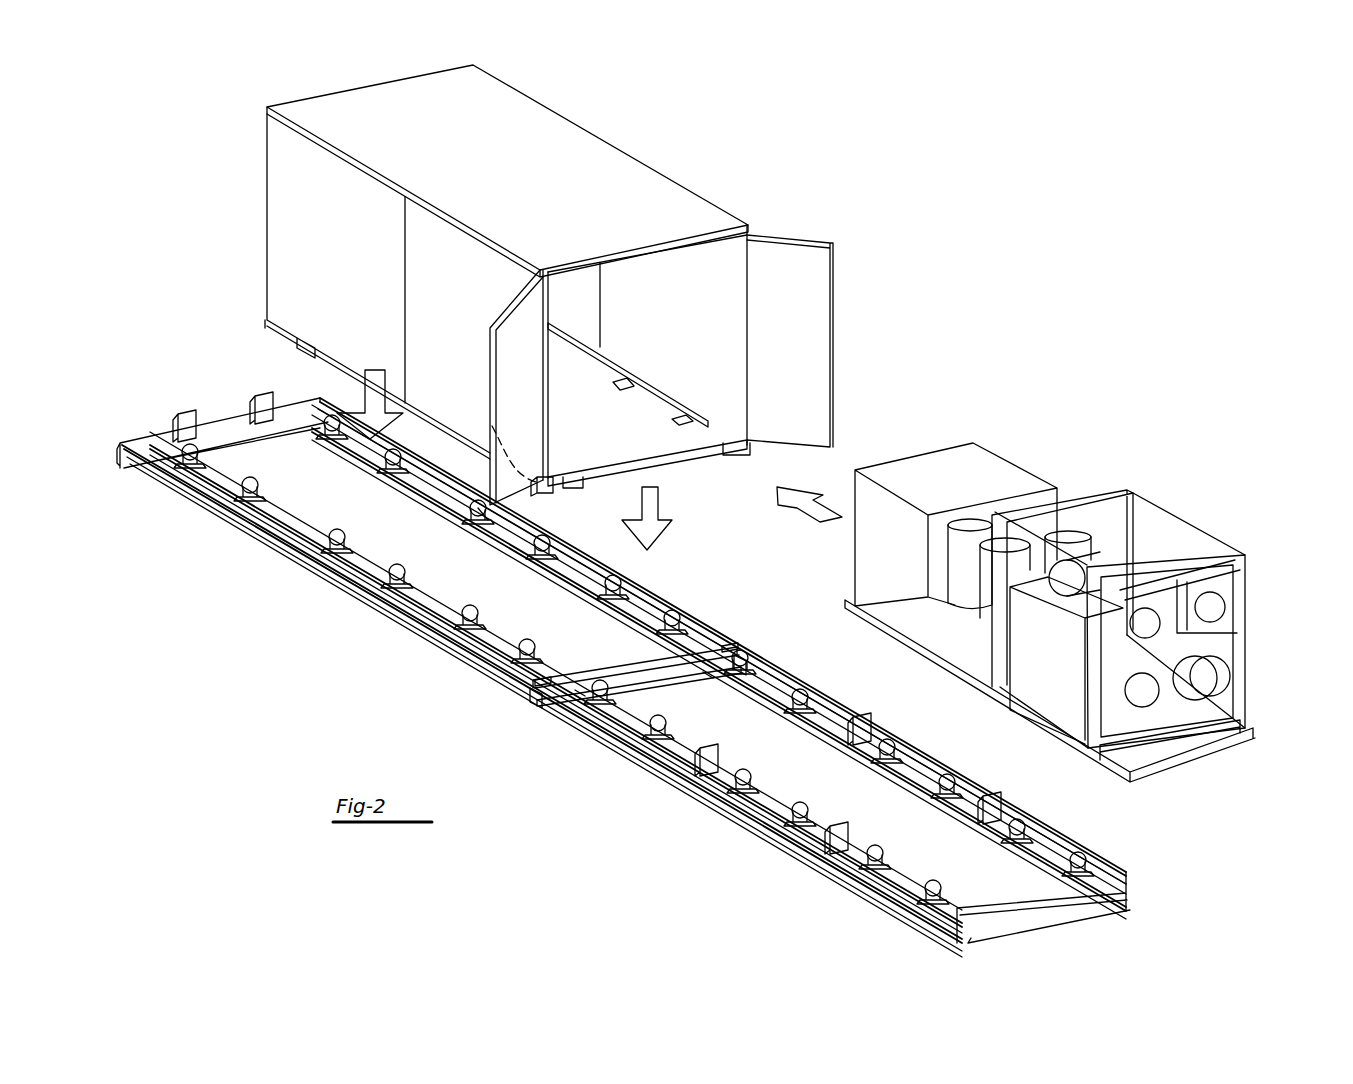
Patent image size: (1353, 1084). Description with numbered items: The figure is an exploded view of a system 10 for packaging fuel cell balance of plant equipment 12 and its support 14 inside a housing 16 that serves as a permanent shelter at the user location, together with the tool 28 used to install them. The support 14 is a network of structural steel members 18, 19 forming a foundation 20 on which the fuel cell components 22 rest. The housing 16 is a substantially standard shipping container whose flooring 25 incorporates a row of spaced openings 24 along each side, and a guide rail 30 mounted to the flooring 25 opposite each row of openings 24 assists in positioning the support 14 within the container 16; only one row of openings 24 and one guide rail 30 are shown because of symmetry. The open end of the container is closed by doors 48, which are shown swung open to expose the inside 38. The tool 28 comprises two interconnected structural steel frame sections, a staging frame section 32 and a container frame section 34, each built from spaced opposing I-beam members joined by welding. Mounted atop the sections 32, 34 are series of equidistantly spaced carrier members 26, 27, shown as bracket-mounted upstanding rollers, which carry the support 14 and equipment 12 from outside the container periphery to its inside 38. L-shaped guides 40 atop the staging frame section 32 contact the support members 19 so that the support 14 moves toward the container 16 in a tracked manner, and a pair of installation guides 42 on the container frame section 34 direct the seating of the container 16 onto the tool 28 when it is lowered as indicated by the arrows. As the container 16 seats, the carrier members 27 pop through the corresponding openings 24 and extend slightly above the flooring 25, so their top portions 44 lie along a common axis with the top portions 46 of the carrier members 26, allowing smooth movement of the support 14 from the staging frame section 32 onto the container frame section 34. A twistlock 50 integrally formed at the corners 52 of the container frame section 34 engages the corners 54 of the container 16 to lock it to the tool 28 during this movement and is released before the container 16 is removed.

The system 10 is at (896, 352).
The fuel cell balance of plant equipment 12 is at (1090, 429).
The support 14 is at (1225, 807).
The housing 16 is at (731, 164).
The structural steel member 18 is at (1222, 620).
The structural steel member 19 is at (1240, 745).
The foundation 20 is at (1172, 730).
The fuel cell components 22 is at (1140, 525).
The openings 24 is at (700, 427).
The flooring 25 is at (630, 430).
The carrier members 26 is at (900, 862).
The carrier members 27 is at (537, 480).
The tool 28 is at (266, 592).
The guide rail 30 is at (655, 383).
The staging frame section 32 is at (750, 817).
The container frame section 34 is at (253, 517).
The inside 38 is at (592, 375).
The guides 40 is at (690, 765).
The installation guides 42 is at (262, 398).
The top portions 44 is at (669, 617).
The top portions 46 is at (797, 693).
The door 48 is at (534, 403).
The twistlock 50 is at (490, 424).
The corners 52 is at (530, 688).
The corners 54 is at (577, 480).